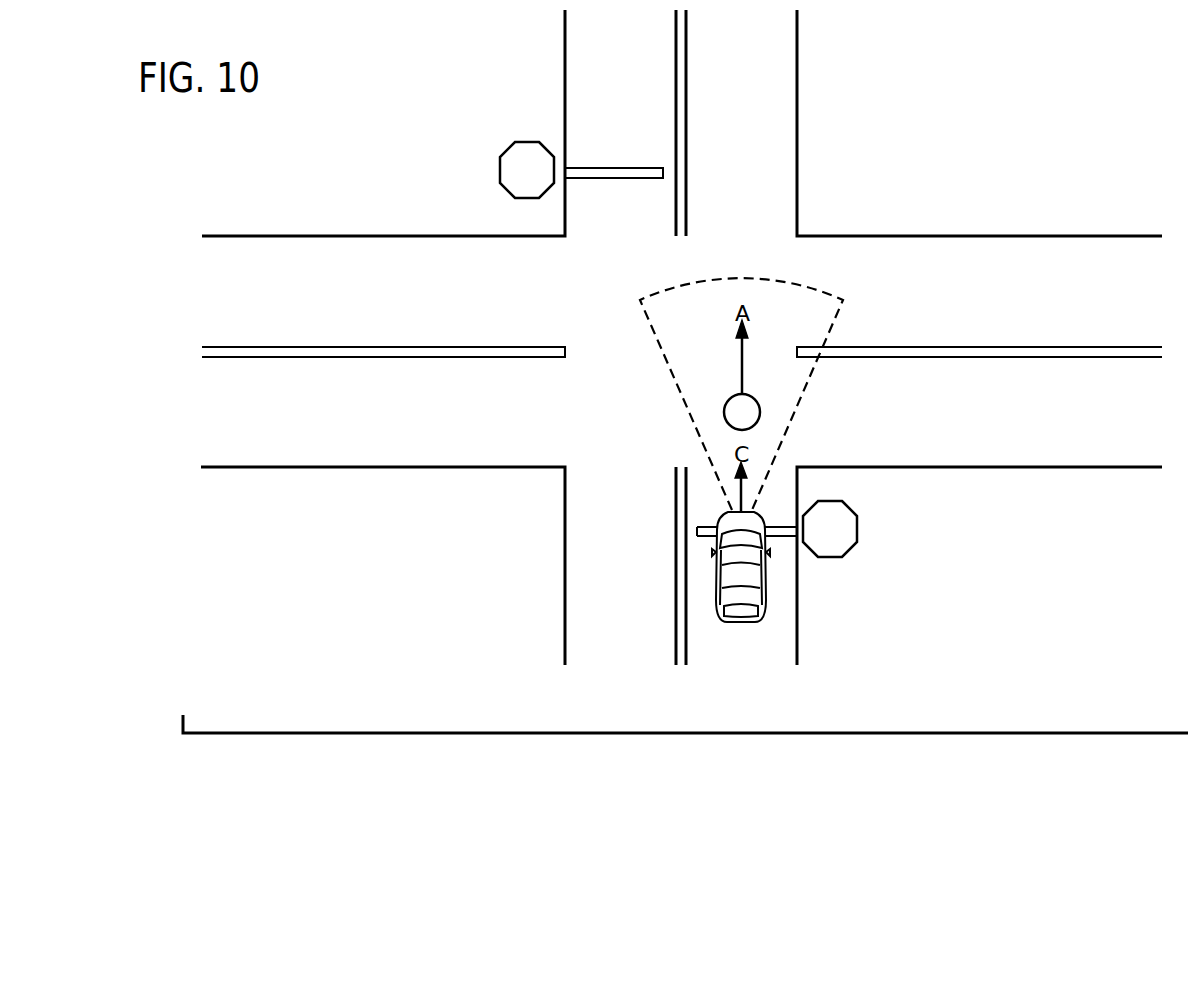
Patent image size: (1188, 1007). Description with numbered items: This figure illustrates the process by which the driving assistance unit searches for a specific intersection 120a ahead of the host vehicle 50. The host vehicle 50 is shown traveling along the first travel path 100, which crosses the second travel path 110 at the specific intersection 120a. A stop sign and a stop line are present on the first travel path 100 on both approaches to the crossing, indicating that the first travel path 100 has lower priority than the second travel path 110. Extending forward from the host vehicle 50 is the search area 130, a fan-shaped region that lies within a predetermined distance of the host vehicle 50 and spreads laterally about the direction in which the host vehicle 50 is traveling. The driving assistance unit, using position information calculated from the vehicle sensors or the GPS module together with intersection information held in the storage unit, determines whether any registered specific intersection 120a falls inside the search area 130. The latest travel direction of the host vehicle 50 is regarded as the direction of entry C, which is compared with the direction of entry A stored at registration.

The host vehicle 50 is at (740, 622).
The first travel path 100 is at (797, 52).
The second travel path 110 is at (312, 236).
The specific intersection 120a is at (822, 213).
The search area 130 is at (797, 401).